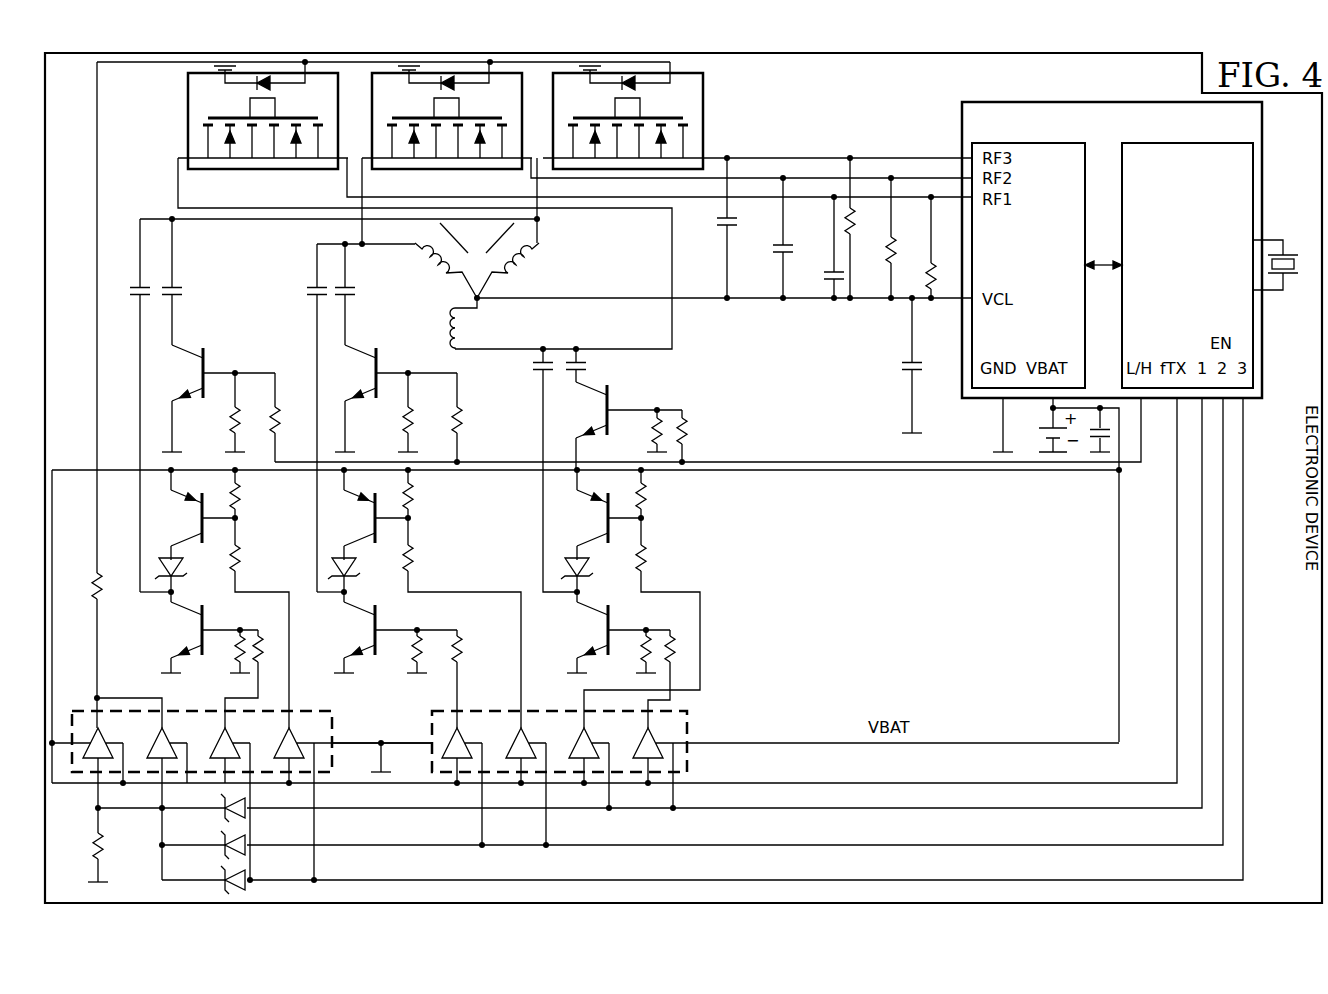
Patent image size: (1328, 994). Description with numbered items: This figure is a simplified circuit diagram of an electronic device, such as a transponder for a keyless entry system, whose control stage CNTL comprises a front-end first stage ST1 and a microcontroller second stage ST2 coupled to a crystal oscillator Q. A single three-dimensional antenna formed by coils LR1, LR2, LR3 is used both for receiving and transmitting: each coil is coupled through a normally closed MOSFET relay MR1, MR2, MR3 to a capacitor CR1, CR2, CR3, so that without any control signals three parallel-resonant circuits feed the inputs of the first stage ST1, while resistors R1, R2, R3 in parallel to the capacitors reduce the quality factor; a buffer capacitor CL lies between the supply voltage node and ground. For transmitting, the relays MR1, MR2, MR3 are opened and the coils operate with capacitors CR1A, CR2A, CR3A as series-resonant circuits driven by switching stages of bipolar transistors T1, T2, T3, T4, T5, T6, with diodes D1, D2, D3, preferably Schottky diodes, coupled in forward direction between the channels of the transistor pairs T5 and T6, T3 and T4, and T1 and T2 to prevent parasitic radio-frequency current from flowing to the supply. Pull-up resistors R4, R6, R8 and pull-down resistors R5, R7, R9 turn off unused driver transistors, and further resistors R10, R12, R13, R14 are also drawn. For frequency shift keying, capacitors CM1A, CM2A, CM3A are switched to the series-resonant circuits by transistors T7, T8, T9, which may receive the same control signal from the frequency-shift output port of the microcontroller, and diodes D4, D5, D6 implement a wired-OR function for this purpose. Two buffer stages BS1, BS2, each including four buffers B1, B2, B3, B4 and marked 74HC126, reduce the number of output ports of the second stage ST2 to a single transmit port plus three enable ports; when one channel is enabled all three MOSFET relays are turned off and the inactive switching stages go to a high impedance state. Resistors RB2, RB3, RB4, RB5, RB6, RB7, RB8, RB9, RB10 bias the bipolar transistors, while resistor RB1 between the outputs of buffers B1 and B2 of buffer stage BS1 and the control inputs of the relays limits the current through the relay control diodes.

The first MOSFET relay MR1 is at (245, 115).
The second MOSFET relay MR2 is at (447, 128).
The third MOSFET relay MR3 is at (644, 115).
The first coil LR1 is at (447, 323).
The second coil LR2 is at (444, 260).
The third coil LR3 is at (508, 260).
The capacitor of first parallel-resonant circuit CR1 is at (817, 247).
The capacitor of second parallel-resonant circuit CR2 is at (765, 238).
The capacitor of third parallel-resonant circuit CR3 is at (710, 228).
The resistor R1 is at (942, 247).
The resistor R2 is at (902, 238).
The resistor R3 is at (861, 228).
The buffer capacitor CL is at (899, 365).
The control stage CNTL is at (1112, 250).
The first stage ST1 is at (1028, 265).
The second stage ST2 is at (1187, 265).
The crystal oscillator Q is at (1284, 265).
The capacitor of third series-resonant circuit CR3A is at (126, 405).
The third frequency-shift capacitor CM3A is at (181, 282).
The capacitor of second series-resonant circuit CR2A is at (297, 418).
The second frequency-shift capacitor CM2A is at (368, 294).
The capacitor of first series-resonant circuit CR1A is at (532, 470).
The first frequency-shift capacitor CM1A is at (601, 365).
The first transistor T1 is at (600, 515).
The second transistor T2 is at (617, 632).
The third transistor T3 is at (367, 515).
The fourth transistor T4 is at (394, 632).
The fifth transistor T5 is at (193, 515).
The sixth transistor T6 is at (204, 632).
The seventh transistor T7 is at (618, 426).
The eighth transistor T8 is at (392, 398).
The ninth transistor T9 is at (215, 398).
The pull-up resistor R4 is at (652, 494).
The pull-down resistor R5 is at (635, 651).
The pull-up resistor R6 is at (419, 494).
The pull-down resistor R7 is at (406, 651).
The pull-up resistor R8 is at (246, 494).
The pull-down resistor R9 is at (229, 651).
The resistor R10 is at (643, 431).
The resistor R12 is at (397, 412).
The resistor R13 is at (224, 412).
The resistor R14 is at (82, 845).
The current-limiting resistor RB1 is at (80, 650).
The biasing resistor RB2 is at (252, 679).
The biasing resistor RB3 is at (259, 623).
The biasing resistor RB4 is at (474, 679).
The biasing resistor RB5 is at (462, 623).
The biasing resistor RB6 is at (669, 679).
The biasing resistor RB7 is at (642, 623).
The biasing resistor RB8 is at (698, 436).
The biasing resistor RB9 is at (473, 417).
The biasing resistor RB10 is at (283, 417).
The first diode D1 is at (184, 573).
The second diode D2 is at (357, 573).
The third diode D3 is at (590, 573).
The fourth diode D4 is at (218, 805).
The fifth diode D5 is at (218, 842).
The sixth diode D6 is at (218, 877).
The first buffer stage BS1 is at (202, 729).
The second buffer stage BS2 is at (579, 740).
The quad tri-state buffer IC 74HC126 is at (382, 737).
The first buffer B1 is at (284, 739).
The second buffer B2 is at (348, 739).
The third buffer B3 is at (411, 739).
The fourth buffer B4 is at (475, 739).